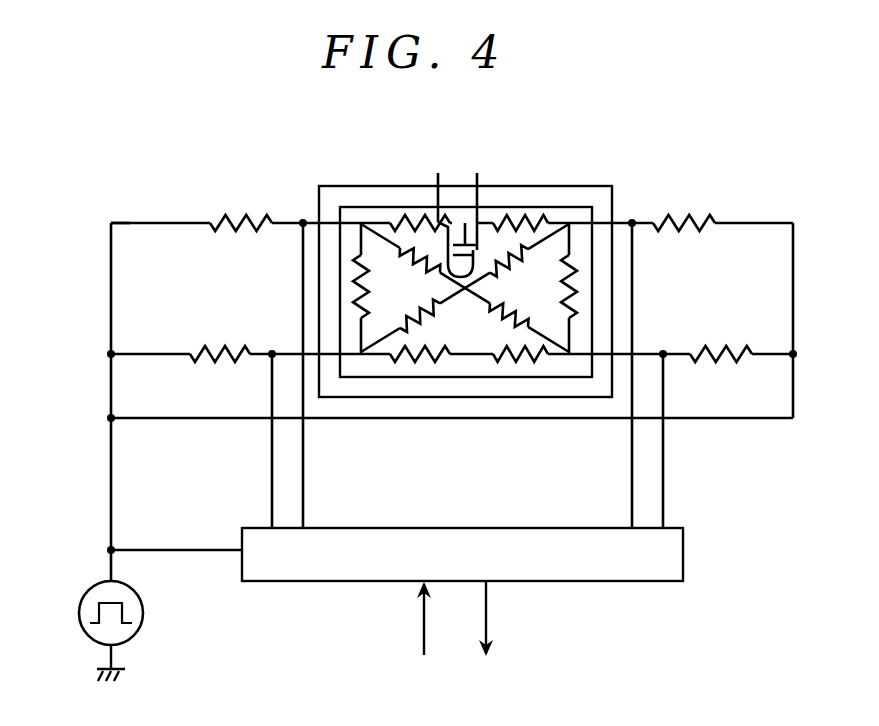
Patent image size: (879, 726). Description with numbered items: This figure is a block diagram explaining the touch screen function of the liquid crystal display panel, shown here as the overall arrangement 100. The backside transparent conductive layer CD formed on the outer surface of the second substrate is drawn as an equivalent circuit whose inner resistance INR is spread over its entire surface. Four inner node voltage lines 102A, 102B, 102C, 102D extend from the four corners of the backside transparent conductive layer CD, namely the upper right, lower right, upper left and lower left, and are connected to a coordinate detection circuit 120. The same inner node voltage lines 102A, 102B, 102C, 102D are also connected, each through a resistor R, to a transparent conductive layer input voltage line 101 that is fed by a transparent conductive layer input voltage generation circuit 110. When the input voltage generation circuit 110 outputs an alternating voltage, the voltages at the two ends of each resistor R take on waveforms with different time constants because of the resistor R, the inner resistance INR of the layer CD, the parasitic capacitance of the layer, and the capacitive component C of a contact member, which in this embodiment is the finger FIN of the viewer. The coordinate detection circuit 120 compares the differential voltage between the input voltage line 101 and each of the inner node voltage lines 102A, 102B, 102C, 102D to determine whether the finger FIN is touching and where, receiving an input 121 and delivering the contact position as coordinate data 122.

The semiconductor pressure sensor chip 100 is at (333, 193).
The backside transparent conductive layer CD is at (352, 215).
The finger FIN is at (457, 190).
The capacitive component C is at (472, 240).
The inner resistance INR is at (580, 285).
The resistor R is at (241, 215).
The transparent conductive layer input voltage line 101 is at (110, 275).
The inner node voltage line 102A is at (272, 472).
The inner node voltage line 102B is at (305, 472).
The inner node voltage line 102C is at (631, 472).
The inner node voltage line 102D is at (666, 472).
The transparent conductive layer input voltage generation circuit 110 is at (84, 599).
The coordinate detection circuit 120 is at (288, 574).
The input signal 121 is at (421, 620).
The coordinate data 122 is at (489, 620).